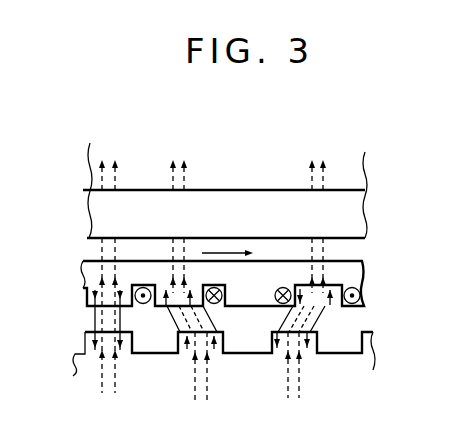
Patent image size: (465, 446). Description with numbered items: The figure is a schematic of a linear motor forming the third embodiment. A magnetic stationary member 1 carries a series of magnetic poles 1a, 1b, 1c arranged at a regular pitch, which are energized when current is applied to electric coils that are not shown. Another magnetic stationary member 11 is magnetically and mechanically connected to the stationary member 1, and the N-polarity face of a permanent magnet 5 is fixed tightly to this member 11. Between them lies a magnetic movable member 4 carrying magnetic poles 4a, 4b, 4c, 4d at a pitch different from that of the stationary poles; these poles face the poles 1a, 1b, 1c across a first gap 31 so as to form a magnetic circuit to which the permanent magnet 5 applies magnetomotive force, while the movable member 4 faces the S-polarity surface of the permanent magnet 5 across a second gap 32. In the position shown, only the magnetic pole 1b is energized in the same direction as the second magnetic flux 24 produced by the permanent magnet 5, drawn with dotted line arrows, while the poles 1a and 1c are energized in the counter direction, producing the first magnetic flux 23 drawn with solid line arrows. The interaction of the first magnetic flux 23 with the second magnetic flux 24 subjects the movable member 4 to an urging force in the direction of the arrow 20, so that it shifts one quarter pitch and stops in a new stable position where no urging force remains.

The magnetic stationary member 1 is at (358, 356).
The magnetic pole 1a is at (85, 338).
The magnetic pole 1b is at (218, 338).
The magnetic pole 1c is at (311, 348).
The magnetic movable member 4 is at (357, 263).
The magnetic pole 4a is at (88, 295).
The magnetic pole 4b is at (157, 308).
The magnetic pole 4c is at (257, 307).
The magnetic pole 4d is at (344, 281).
The permanent magnet 5 is at (341, 197).
The magnetic stationary member 11 is at (368, 182).
The arrow 20 is at (209, 248).
The first magnetic flux 23 is at (307, 285).
The second magnetic flux 24 is at (318, 317).
The first gap 31 is at (215, 319).
The second gap 32 is at (95, 252).